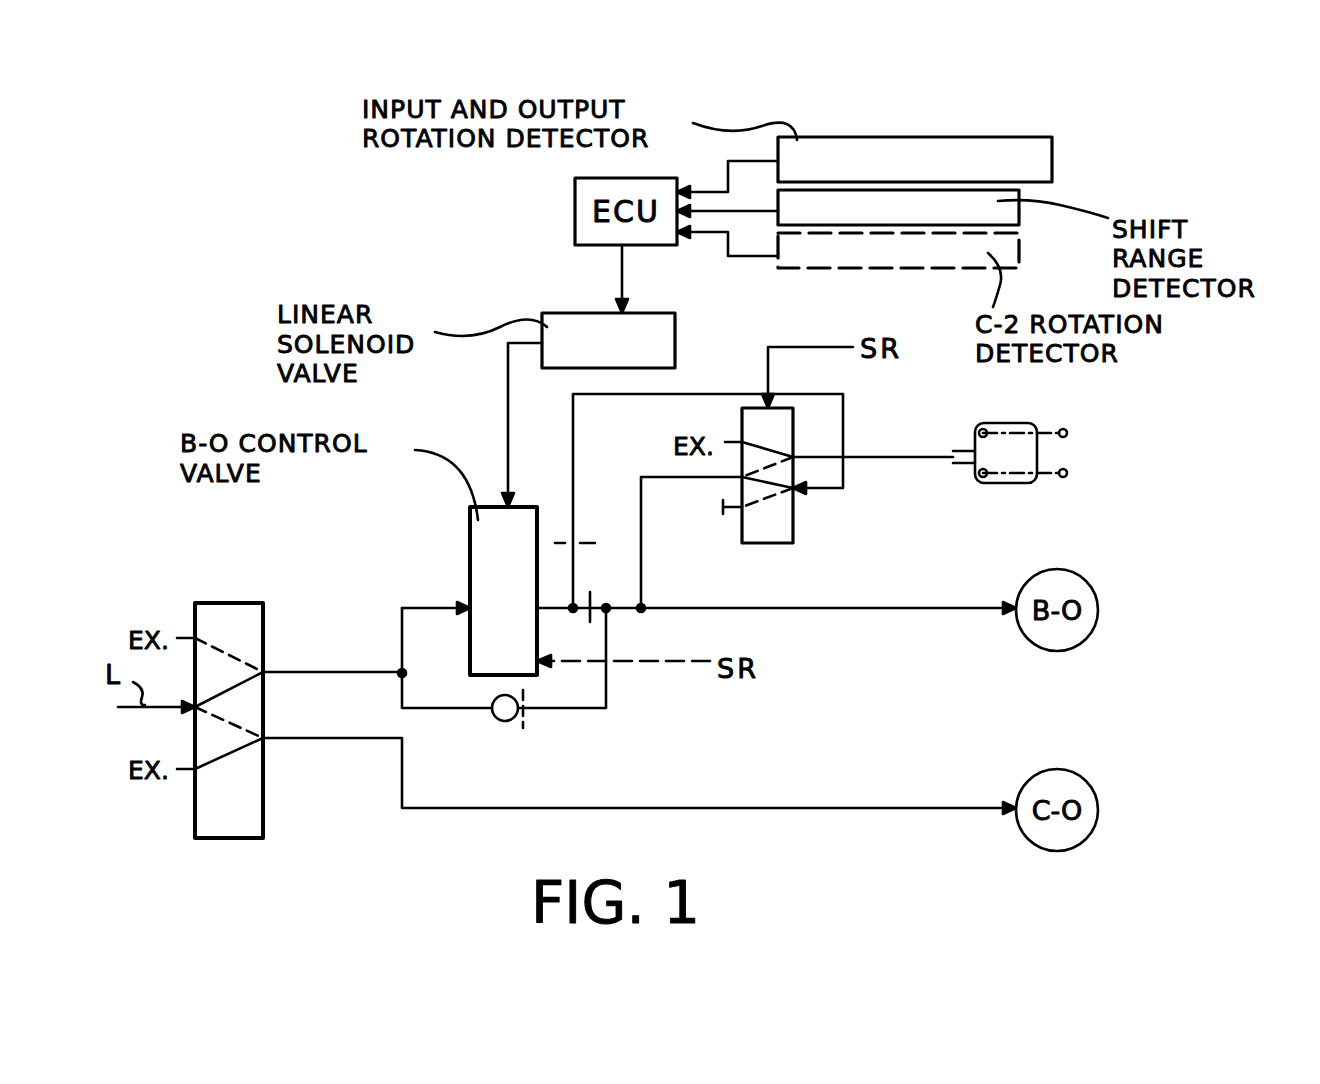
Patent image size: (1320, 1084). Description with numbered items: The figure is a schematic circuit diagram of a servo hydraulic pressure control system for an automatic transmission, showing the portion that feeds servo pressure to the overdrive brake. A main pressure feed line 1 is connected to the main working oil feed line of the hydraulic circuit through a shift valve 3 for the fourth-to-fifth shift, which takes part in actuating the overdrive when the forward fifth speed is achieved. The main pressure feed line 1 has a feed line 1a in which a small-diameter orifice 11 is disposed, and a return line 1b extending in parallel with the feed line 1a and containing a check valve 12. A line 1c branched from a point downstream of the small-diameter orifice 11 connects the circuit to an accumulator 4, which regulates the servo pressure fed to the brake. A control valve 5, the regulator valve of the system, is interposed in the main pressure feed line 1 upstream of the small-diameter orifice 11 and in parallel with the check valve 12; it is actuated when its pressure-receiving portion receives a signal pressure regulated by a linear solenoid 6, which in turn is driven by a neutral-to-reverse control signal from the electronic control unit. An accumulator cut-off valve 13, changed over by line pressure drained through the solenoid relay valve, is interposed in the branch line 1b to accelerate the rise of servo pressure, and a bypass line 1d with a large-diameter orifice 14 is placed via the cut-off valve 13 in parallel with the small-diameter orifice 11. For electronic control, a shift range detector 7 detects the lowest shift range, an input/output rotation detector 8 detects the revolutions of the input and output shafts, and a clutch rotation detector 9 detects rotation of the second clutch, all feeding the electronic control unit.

The main pressure feed line 1 is at (323, 663).
The feed line 1a is at (423, 607).
The return line 1b is at (445, 708).
The line 1c is at (641, 543).
The bypass line 1d is at (573, 445).
The 4-5 shift valve 3 is at (250, 603).
The accumulator 4 is at (1003, 483).
The B-0 control valve 5 is at (470, 532).
The linear solenoid 6 is at (563, 313).
The shift range detector 7 is at (1019, 202).
The input/output rotation detector 8 is at (1052, 152).
The C-2 rotation detector 9 is at (1019, 247).
The small-diameter orifice 11 is at (597, 597).
The check valve 12 is at (512, 727).
The B-0 accumulator cut-off valve 13 is at (793, 513).
The large-diameter orifice 14 is at (578, 535).